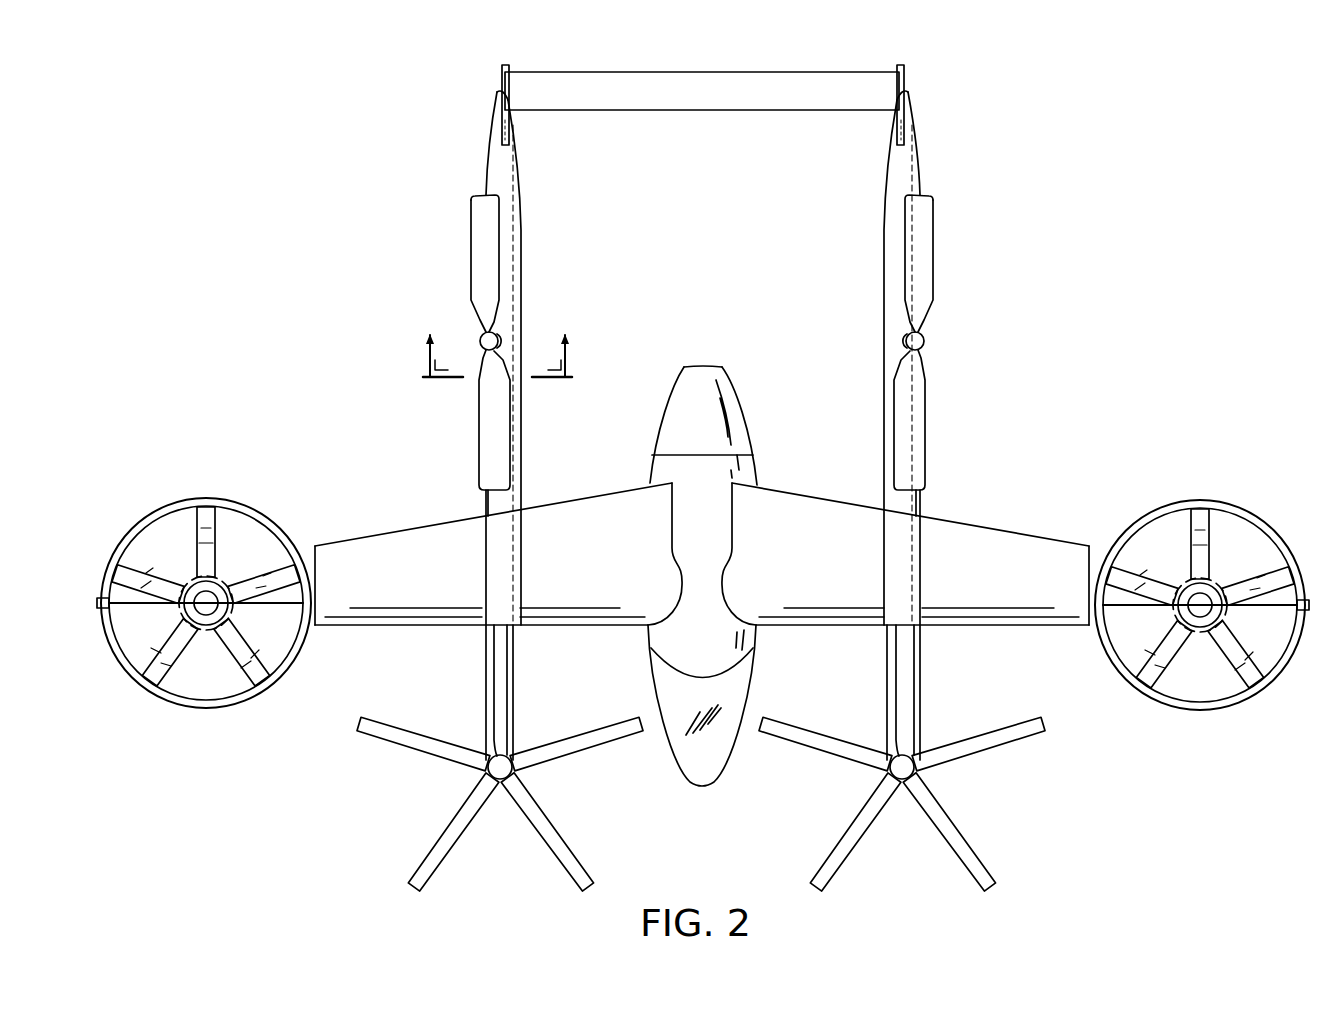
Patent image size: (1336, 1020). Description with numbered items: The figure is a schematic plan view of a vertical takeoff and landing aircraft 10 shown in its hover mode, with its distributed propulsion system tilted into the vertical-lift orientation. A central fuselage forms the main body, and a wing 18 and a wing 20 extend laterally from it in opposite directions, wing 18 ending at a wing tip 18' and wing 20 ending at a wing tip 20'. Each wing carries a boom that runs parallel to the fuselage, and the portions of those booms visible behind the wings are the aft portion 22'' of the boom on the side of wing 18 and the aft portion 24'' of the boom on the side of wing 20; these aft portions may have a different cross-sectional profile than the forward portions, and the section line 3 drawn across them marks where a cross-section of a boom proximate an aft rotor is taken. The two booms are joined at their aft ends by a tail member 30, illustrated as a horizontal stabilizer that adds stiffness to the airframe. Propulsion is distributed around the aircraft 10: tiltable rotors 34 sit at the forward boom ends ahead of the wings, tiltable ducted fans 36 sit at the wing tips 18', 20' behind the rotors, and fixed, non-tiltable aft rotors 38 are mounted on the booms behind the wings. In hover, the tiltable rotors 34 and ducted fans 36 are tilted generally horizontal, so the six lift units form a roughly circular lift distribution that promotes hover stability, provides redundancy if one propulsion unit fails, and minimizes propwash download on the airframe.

The VTOL aircraft 10 is at (243, 152).
The tail member 30 is at (703, 71).
The aft portion of boom 24 24'' is at (544, 425).
The aft portion of boom 22 22'' is at (866, 425).
The aft rotors 38 is at (443, 277).
The section line 3- 3 is at (496, 339).
The wing 20 is at (498, 550).
The wing tip 20' is at (317, 550).
The wing 18 is at (905, 550).
The wing tip 18' is at (1091, 550).
The tiltable ducted fans 36 is at (154, 492).
The tiltable rotors 34 is at (410, 814).